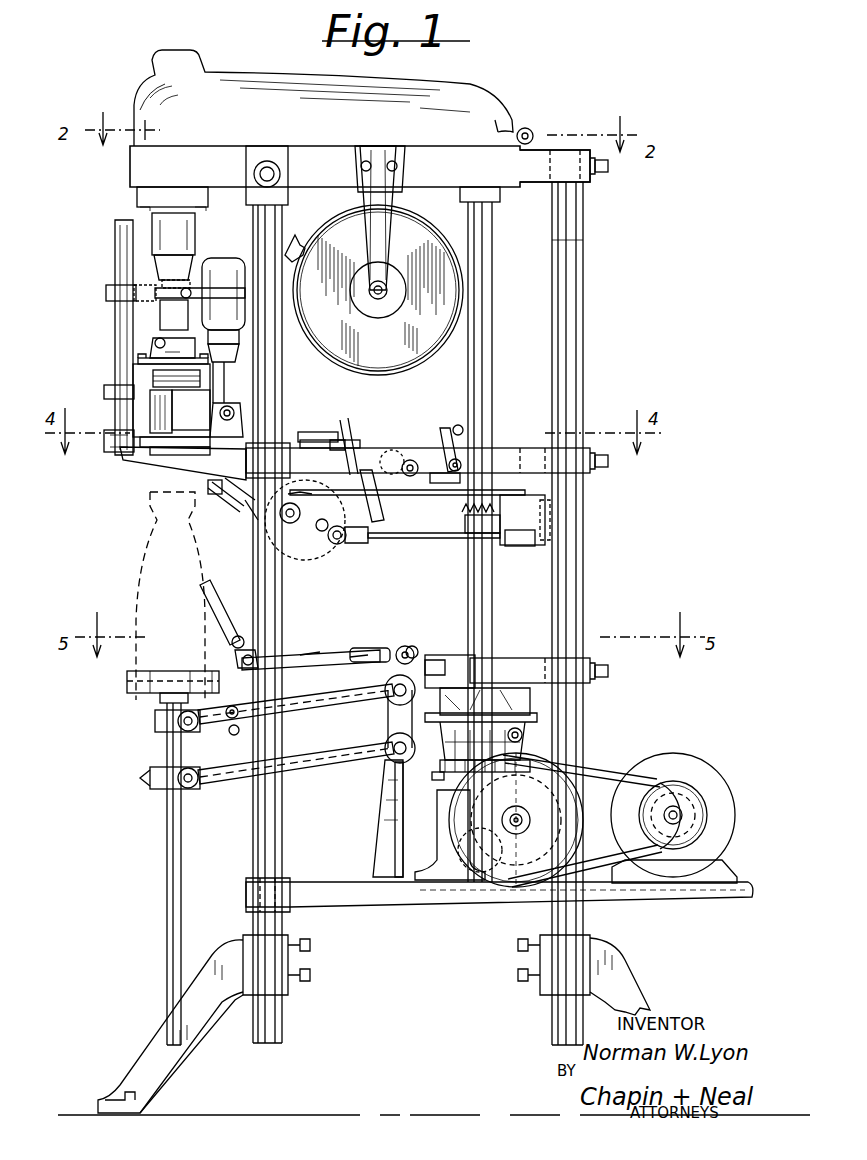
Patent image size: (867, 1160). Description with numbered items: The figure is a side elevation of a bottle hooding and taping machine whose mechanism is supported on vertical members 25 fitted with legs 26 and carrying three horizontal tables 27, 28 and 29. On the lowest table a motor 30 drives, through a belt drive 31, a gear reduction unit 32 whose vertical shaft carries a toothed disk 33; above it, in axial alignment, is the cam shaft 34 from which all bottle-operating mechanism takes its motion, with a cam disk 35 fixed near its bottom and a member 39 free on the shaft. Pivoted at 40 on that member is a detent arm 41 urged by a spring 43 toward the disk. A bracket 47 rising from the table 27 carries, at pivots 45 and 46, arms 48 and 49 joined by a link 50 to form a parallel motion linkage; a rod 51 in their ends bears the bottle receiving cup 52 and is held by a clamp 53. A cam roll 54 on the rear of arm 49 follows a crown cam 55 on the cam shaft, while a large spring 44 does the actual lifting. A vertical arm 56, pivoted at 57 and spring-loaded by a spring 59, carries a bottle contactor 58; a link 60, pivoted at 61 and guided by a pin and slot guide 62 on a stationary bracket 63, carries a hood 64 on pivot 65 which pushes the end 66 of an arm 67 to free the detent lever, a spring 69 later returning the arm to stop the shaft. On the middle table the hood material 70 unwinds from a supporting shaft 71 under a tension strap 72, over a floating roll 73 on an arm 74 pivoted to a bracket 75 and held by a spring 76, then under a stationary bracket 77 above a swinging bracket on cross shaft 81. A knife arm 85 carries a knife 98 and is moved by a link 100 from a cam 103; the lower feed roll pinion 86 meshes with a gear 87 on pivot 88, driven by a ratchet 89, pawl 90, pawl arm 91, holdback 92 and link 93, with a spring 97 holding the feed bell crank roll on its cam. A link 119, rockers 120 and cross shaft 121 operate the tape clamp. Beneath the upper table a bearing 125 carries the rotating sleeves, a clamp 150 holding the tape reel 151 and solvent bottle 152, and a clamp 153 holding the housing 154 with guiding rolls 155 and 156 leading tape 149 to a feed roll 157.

The vertical members 25 is at (570, 297).
The legs 26 is at (165, 1032).
The table 27 is at (640, 898).
The table 28 is at (510, 450).
The table 29 is at (520, 176).
The motor 30 is at (735, 823).
The belt drive 31 is at (625, 773).
The gear reduction unit 32 is at (442, 862).
The toothed disk 33 is at (540, 770).
The cam shaft 34 is at (500, 560).
The cam disk 35 is at (535, 698).
The member 39 is at (450, 772).
The pivot 40 is at (432, 778).
The arm 41 is at (410, 770).
The spring 43 is at (455, 738).
The spring 44 is at (500, 870).
The pivot 45 is at (386, 758).
The pivot 46 is at (385, 700).
The bracket 47 is at (390, 845).
The arm 48 is at (230, 780).
The arm 49 is at (300, 707).
The link 50 is at (188, 735).
The rod 51 is at (167, 745).
The bottle receiving cup 52 is at (140, 685).
The clamp 53 is at (150, 780).
The cam roll 54 is at (470, 660).
The crown cam 55 is at (510, 683).
The vertical arm 56 is at (225, 635).
The pivot 57 is at (232, 735).
The bottle contactor 58 is at (200, 595).
The spring 59 is at (240, 730).
The link 60 is at (318, 645).
The pivot 61 is at (245, 660).
The pin and slot guide 62 is at (412, 650).
The stationary bracket 63 is at (435, 660).
The hood 64 is at (375, 648).
The pivot 65 is at (356, 656).
The end 66 is at (412, 646).
The arm 67 is at (390, 740).
The spring 69 is at (318, 653).
The hood material 70 is at (378, 368).
The supporting shaft 71 is at (378, 300).
The tension strap 72 is at (298, 238).
The floating roll 73 is at (447, 428).
The arm 74 is at (425, 458).
The bracket 75 is at (380, 462).
The spring 76 is at (365, 545).
The stationary bracket 77 is at (350, 430).
The cross shaft 81 is at (335, 450).
The knife arm 85 is at (225, 505).
The pinion 86 is at (232, 468).
The gear 87 is at (252, 520).
The pivot 88 is at (302, 550).
The ratchet 89 is at (320, 540).
The pawl 90 is at (345, 548).
The pawl arm 91 is at (326, 530).
The spring holdback 92 is at (358, 440).
The link 93 is at (432, 495).
The spring 97 is at (462, 512).
The knife 98 is at (212, 484).
The link 100 is at (410, 540).
The cam 103 is at (470, 533).
The link 119 is at (315, 432).
The rocker 120 is at (460, 425).
The cross shaft 121 is at (490, 462).
The bearing 125 is at (185, 232).
The tape 149 is at (112, 340).
The clamp 150 is at (108, 290).
The tape reel 151 is at (120, 322).
The bottle 152 is at (223, 270).
The clamp 153 is at (168, 338).
The housing 154 is at (200, 400).
The tape guiding roll 155 is at (104, 392).
The tape guiding roll 156 is at (104, 440).
The feed roll 157 is at (165, 455).